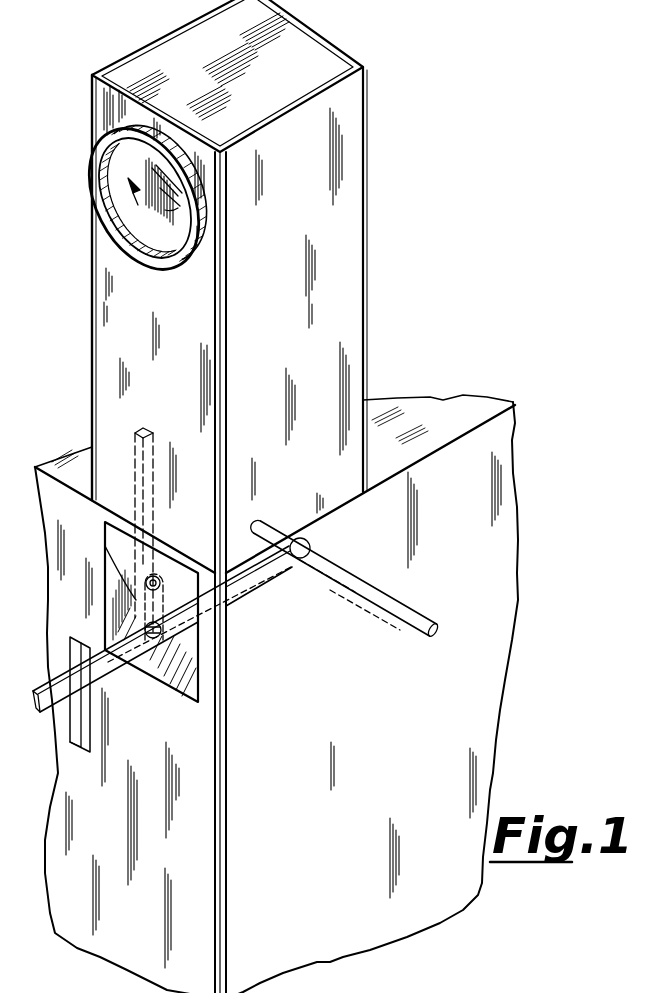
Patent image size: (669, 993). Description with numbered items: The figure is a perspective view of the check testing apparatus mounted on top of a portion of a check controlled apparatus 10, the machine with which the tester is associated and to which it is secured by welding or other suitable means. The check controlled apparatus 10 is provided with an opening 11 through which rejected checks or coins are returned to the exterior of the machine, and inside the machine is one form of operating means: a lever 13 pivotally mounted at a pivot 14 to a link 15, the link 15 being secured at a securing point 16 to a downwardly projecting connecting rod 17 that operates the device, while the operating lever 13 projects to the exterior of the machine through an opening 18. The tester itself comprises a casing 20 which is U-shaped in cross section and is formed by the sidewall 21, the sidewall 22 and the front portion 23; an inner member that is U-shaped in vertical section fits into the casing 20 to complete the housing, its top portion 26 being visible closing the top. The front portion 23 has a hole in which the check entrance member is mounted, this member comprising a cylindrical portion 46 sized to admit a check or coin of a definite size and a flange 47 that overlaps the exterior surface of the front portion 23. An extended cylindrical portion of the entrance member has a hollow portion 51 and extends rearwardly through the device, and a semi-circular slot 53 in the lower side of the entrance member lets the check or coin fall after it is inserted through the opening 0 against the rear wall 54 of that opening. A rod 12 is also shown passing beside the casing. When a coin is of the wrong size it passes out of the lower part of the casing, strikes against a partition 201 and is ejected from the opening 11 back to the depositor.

The check controlled apparatus 10 is at (58, 458).
The opening 11 is at (142, 680).
The rod 12 is at (323, 560).
The lever 13 is at (260, 578).
The pivot 14 is at (168, 634).
The link 15 is at (161, 604).
The securing point 16 is at (158, 577).
The connecting rod 17 is at (148, 522).
The opening 18 is at (84, 710).
The casing 20 is at (257, 496).
The sidewall 21 is at (293, 103).
The sidewall 22 is at (157, 24).
The front portion 23 is at (159, 534).
The top portion 26 is at (292, 52).
The cylindrical portion 46 is at (98, 172).
The flange 47 is at (172, 205).
The hollow portion 51 is at (166, 186).
The semi-circular slot 53 is at (127, 190).
The rear wall 54 is at (170, 205).
The opening 0 is at (121, 163).
The partition 201 is at (114, 554).